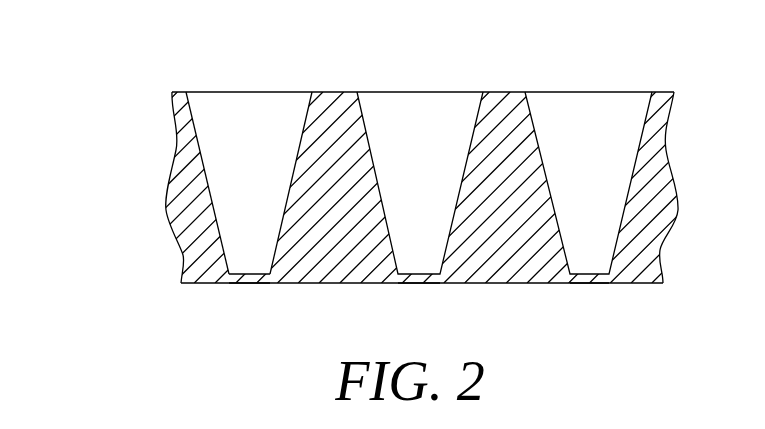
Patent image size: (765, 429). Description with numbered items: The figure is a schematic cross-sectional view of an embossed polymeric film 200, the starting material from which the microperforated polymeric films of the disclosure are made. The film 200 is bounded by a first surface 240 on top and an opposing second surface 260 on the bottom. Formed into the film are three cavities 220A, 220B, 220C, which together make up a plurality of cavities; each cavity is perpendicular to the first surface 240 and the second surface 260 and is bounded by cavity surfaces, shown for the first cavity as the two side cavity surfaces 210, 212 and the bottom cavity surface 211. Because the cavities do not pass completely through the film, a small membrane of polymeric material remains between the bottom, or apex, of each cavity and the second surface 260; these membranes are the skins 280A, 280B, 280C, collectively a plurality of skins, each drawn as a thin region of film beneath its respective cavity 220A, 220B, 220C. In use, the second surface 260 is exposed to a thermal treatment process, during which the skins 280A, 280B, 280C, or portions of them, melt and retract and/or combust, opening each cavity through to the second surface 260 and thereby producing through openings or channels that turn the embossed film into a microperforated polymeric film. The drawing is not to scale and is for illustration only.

The embossed polymeric film 200 is at (382, 184).
The first surface 240 is at (181, 92).
The second surface 260 is at (208, 284).
The cavity surface 210 is at (203, 170).
The cavity surface 212 is at (285, 205).
The cavity surface 211 is at (247, 274).
The cavity 220A is at (249, 150).
The cavity 220B is at (415, 90).
The cavity 220C is at (588, 90).
The skin 280A is at (250, 284).
The skin 280B is at (422, 284).
The skin 280C is at (598, 284).